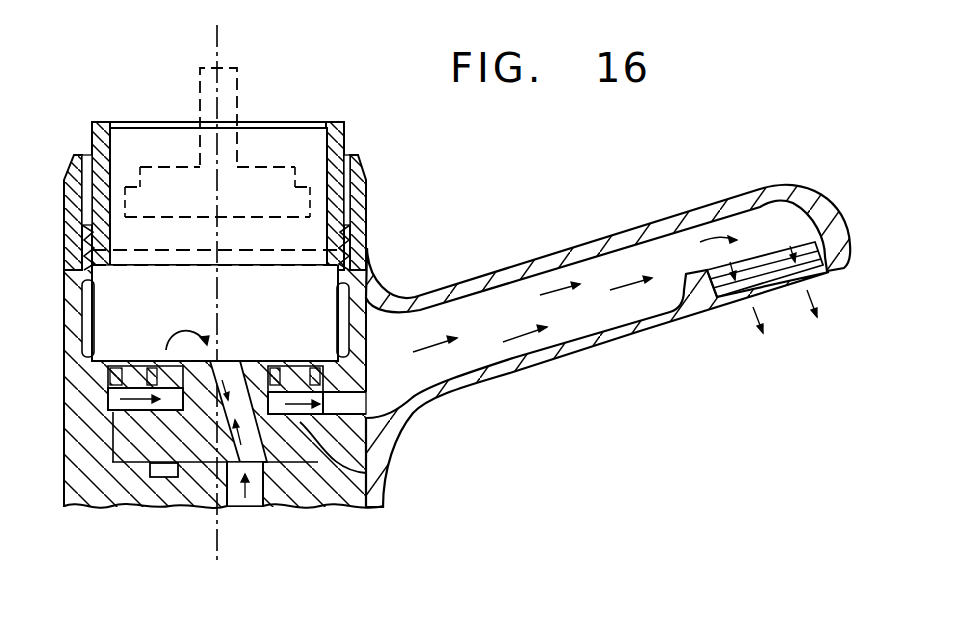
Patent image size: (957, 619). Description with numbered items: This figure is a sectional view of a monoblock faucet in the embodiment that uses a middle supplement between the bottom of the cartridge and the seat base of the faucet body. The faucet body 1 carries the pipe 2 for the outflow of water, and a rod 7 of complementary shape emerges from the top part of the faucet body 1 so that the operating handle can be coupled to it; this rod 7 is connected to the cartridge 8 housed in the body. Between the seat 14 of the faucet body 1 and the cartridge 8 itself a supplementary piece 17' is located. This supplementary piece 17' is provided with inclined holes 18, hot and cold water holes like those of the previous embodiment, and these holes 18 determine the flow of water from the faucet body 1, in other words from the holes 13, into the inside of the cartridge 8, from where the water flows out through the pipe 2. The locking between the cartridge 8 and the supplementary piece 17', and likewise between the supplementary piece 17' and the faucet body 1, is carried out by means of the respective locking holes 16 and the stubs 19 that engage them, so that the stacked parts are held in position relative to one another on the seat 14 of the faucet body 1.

The faucet body 1 is at (66, 243).
The pipe 2 is at (668, 250).
The rod 7 is at (236, 100).
The cartridge 8 is at (372, 254).
The holes 13 is at (254, 478).
The seat 14 is at (313, 495).
The locking holes 16 is at (326, 416).
The supplementary piece 17' is at (359, 456).
The inclined holes 18 is at (219, 370).
The stubs 19 is at (283, 366).